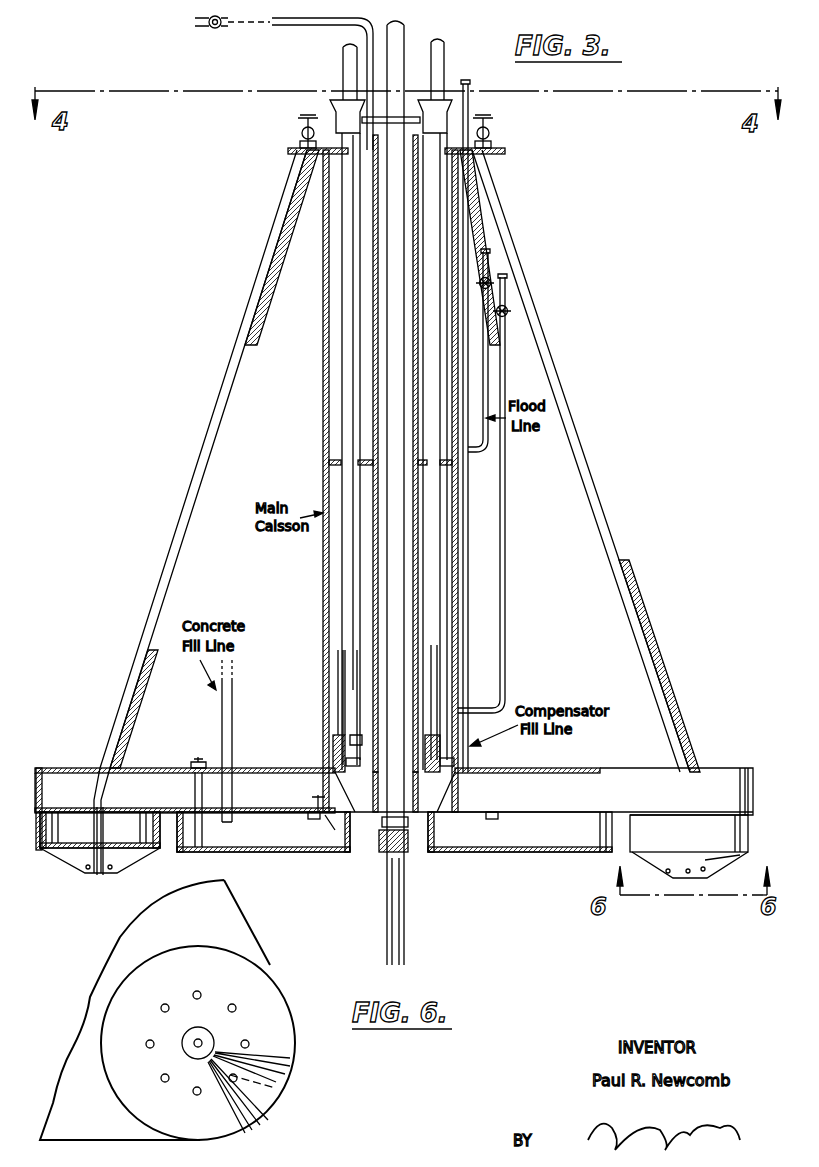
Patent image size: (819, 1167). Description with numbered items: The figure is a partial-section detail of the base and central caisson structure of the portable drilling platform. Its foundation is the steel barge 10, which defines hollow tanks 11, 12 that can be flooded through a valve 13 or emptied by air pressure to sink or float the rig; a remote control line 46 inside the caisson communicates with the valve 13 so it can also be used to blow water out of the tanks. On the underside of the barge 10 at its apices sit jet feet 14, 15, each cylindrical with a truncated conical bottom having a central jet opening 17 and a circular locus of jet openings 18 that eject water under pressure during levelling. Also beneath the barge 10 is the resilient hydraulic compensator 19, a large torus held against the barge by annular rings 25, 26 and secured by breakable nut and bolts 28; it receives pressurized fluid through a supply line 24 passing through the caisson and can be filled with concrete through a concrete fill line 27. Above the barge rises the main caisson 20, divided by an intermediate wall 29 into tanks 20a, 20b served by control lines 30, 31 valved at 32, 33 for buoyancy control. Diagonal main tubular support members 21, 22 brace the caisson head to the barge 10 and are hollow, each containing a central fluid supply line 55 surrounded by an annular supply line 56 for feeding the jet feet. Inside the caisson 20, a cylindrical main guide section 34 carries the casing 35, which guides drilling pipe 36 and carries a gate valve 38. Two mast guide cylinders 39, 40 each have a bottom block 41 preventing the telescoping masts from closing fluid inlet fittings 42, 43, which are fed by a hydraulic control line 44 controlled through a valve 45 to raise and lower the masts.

In FIG. 3, the steel barge 10 is at (148, 768).
In FIG. 3, the hollow tank 11 is at (252, 790).
In FIG. 3, the hollow tank 12 is at (498, 790).
In FIG. 3, the valve 13 is at (355, 826).
In FIG. 3, the jet foot 14 is at (70, 830).
In FIG. 3, the jet foot 15 is at (745, 862).
In FIG. 6, the jet foot 15 is at (265, 1044).
In FIG. 3, the central jet opening 17 is at (100, 871).
In FIG. 6, the central jet opening 17 is at (205, 1043).
In FIG. 3, the jet openings 18 is at (88, 869).
In FIG. 6, the jet openings 18 is at (197, 991).
In FIG. 3, the hydraulic compensator 19 is at (240, 846).
In FIG. 3, the main caisson 20 is at (325, 564).
In FIG. 3, the tank 20a is at (335, 618).
In FIG. 3, the tank 20b is at (335, 407).
In FIG. 3, the main tubular support member 21 is at (196, 432).
In FIG. 3, the main tubular support member 22 is at (600, 490).
In FIG. 3, the supply line 24 is at (462, 142).
In FIG. 3, the annular ring 25 is at (320, 826).
In FIG. 3, the annular ring 26 is at (190, 851).
In FIG. 3, the concrete fill line 27 is at (233, 690).
In FIG. 3, the nut and bolts 28 is at (196, 770).
In FIG. 3, the intermediate wall 29 is at (332, 456).
In FIG. 3, the control line 30 is at (466, 449).
In FIG. 3, the control line 31 is at (501, 650).
In FIG. 3, the valve 32 is at (488, 280).
In FIG. 3, the valve 33 is at (506, 312).
In FIG. 3, the main guide section 34 is at (415, 545).
In FIG. 3, the casing 35 is at (398, 48).
In FIG. 3, the drilling pipe 36 is at (400, 942).
In FIG. 3, the gate valve 38 is at (405, 834).
In FIG. 3, the mast guide cylinder 39 is at (347, 322).
In FIG. 3, the mast guide cylinder 40 is at (438, 262).
In FIG. 3, the block 41 is at (340, 763).
In FIG. 3, the fluid inlet fitting 42 is at (340, 752).
In FIG. 3, the fluid inlet fitting 43 is at (420, 774).
In FIG. 3, the hydraulic control line 44 is at (337, 27).
In FIG. 3, the valve 45 is at (213, 19).
In FIG. 3, the remote control line 46 is at (357, 92).
In FIG. 3, the central fluid supply line 55 is at (122, 743).
In FIG. 3, the annular supply line 56 is at (133, 706).